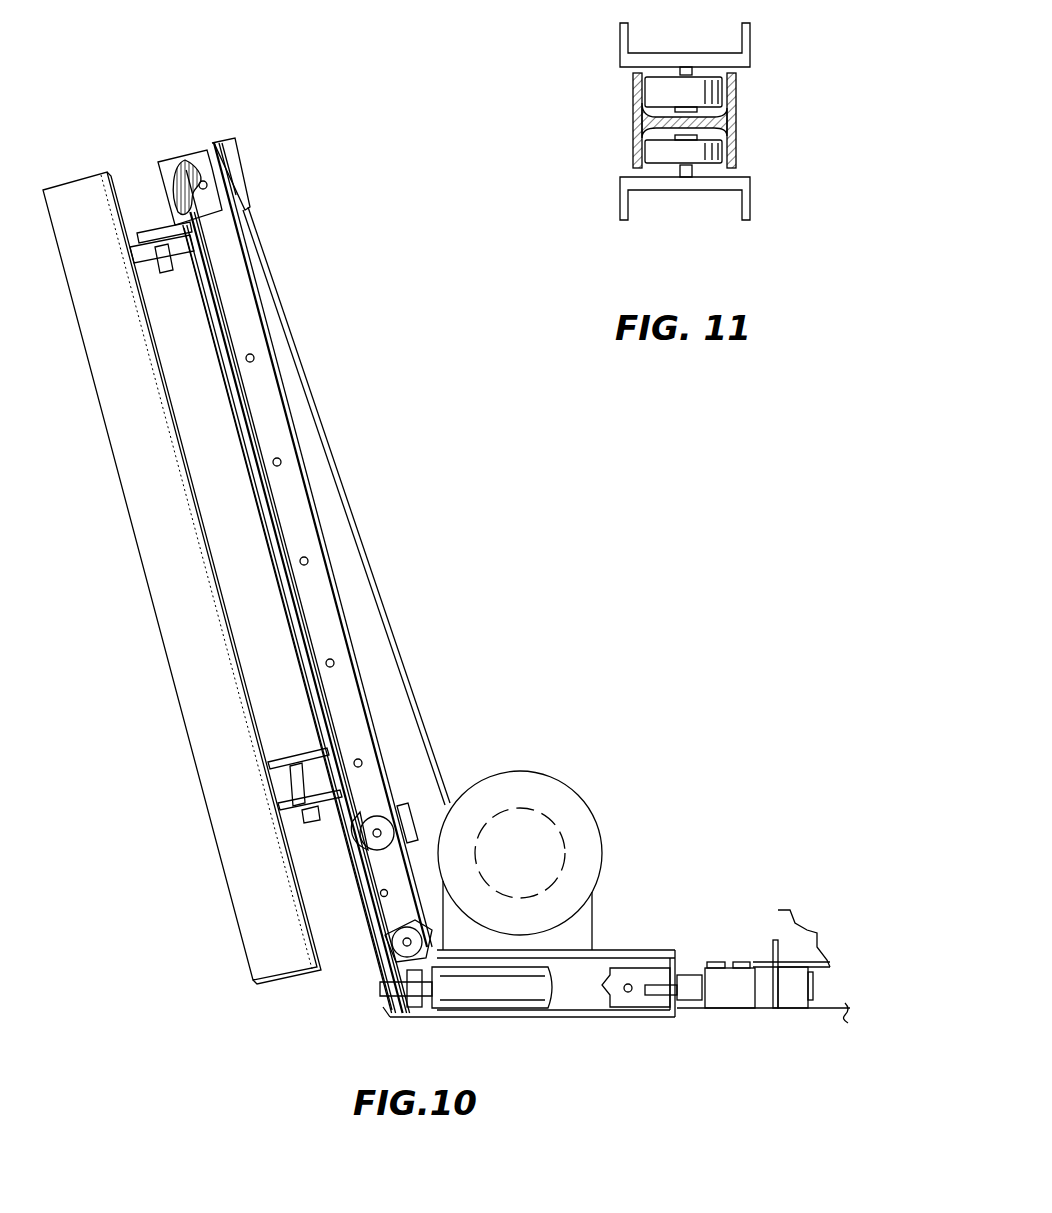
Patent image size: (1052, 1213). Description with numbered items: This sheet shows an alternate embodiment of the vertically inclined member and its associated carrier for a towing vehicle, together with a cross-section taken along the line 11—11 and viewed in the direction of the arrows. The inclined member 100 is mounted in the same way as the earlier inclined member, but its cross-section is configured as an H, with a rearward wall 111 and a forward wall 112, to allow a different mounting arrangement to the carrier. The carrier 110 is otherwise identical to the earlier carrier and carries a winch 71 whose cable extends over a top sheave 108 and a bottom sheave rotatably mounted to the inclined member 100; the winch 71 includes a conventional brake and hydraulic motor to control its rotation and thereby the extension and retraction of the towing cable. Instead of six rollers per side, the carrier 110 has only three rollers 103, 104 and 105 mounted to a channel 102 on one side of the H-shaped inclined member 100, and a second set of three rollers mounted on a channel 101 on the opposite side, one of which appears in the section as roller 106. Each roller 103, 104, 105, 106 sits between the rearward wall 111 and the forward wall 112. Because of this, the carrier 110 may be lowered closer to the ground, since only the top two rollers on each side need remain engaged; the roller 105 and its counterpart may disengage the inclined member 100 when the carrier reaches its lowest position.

In FIG. 10, the winch 71 is at (540, 795).
In FIG. 10, the inclined member 100 is at (323, 600).
In FIG. 11, the inclined member 100 is at (705, 118).
In FIG. 11, the channel 101 is at (746, 42).
In FIG. 11, the channel 102 is at (748, 200).
In FIG. 10, the roller 103 is at (372, 822).
In FIG. 11, the roller 103 is at (666, 156).
In FIG. 10, the roller 104 is at (373, 896).
In FIG. 10, the roller 105 is at (393, 950).
In FIG. 11, the roller 106 is at (655, 92).
In FIG. 10, the top sheave 108 is at (190, 170).
In FIG. 10, the carrier 110 is at (668, 823).
In FIG. 10, the rearward wall 111 is at (302, 463).
In FIG. 11, the rearward wall 111 is at (736, 152).
In FIG. 10, the forward wall 112 is at (277, 540).
In FIG. 11, the forward wall 112 is at (640, 147).
In FIG. 10, the section line 11- 11 is at (290, 828).